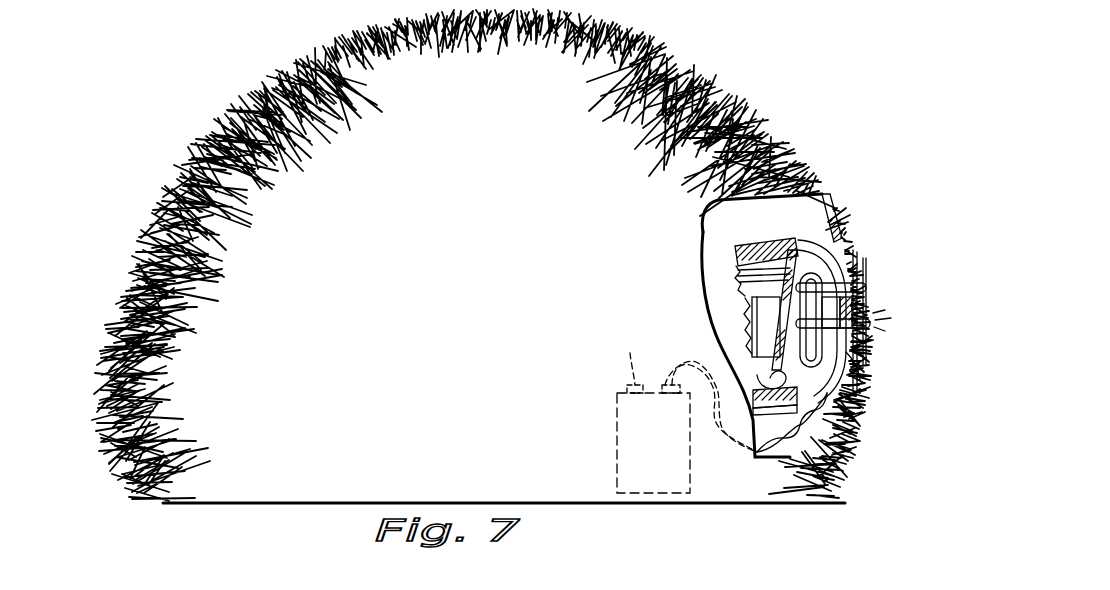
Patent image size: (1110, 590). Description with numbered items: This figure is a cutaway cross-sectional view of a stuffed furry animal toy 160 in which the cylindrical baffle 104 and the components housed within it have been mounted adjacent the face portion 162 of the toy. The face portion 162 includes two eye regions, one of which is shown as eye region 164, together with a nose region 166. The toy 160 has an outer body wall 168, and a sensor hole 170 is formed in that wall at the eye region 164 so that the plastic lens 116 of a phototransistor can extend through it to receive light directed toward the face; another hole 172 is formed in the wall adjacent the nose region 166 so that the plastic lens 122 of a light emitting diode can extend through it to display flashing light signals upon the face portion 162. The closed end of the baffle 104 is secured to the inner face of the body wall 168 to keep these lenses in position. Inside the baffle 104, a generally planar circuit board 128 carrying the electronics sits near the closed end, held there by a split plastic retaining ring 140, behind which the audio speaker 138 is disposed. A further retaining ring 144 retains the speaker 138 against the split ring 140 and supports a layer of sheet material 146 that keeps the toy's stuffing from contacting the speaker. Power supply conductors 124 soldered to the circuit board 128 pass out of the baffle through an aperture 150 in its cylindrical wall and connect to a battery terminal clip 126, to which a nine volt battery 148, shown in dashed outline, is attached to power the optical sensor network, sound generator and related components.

The cylindrical baffle 104 is at (770, 235).
The plastic lens of phototransistor T1 116 is at (866, 292).
The plastic lens of light emitting diode D2 122 is at (871, 328).
The power supply conductors 124 is at (708, 431).
The battery terminal clip 126 is at (616, 361).
The electronic circuit component board 128 is at (845, 226).
The audio speaker 138 is at (752, 298).
The split retaining ring 140 is at (845, 397).
The retaining ring 144 is at (738, 260).
The layer of sheet material 146 is at (752, 368).
The 9 volt battery 148 is at (653, 439).
The aperture 150 is at (852, 442).
The stuffed furry animal toy 160 is at (781, 88).
The face portion 162 is at (858, 203).
The eye region 164 is at (886, 257).
The nose region 166 is at (874, 307).
The outer body wall 168 is at (821, 213).
The sensor hole 170 is at (860, 267).
The hole 172 is at (866, 355).